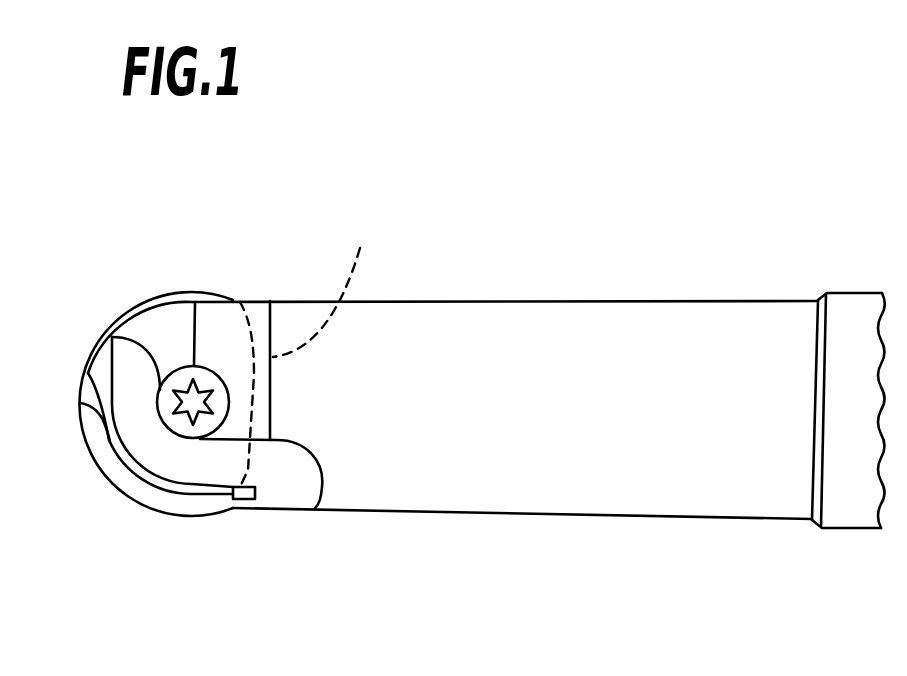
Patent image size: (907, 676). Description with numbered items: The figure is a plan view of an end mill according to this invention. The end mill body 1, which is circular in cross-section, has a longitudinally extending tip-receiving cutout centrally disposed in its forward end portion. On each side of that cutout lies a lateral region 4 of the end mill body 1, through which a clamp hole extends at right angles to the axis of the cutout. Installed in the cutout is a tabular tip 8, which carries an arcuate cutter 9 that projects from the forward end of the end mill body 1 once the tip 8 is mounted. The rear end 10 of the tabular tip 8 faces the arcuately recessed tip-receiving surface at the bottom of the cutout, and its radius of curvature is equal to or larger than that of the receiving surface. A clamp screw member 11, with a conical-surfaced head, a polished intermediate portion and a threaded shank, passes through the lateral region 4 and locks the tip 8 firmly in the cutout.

The end mill body 1 is at (588, 294).
The lateral region of the end mill body 4 is at (215, 325).
The tabular tip 8 is at (130, 504).
The arcuate cutter 9 is at (103, 402).
The rear end of the tabular tip 10 is at (315, 358).
The clamp screw member 11 is at (183, 377).